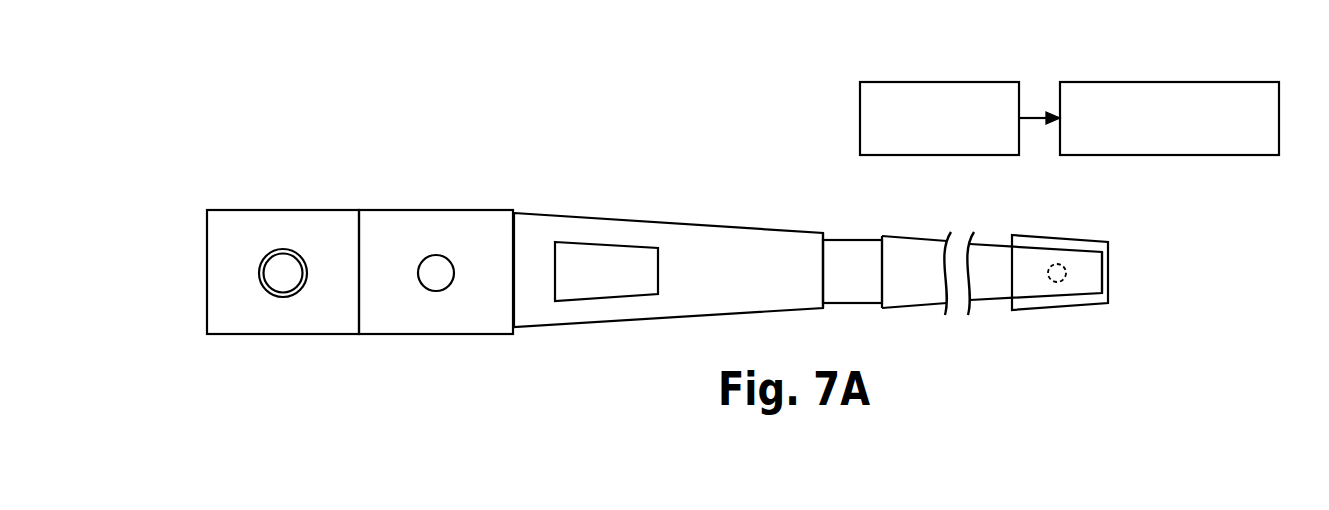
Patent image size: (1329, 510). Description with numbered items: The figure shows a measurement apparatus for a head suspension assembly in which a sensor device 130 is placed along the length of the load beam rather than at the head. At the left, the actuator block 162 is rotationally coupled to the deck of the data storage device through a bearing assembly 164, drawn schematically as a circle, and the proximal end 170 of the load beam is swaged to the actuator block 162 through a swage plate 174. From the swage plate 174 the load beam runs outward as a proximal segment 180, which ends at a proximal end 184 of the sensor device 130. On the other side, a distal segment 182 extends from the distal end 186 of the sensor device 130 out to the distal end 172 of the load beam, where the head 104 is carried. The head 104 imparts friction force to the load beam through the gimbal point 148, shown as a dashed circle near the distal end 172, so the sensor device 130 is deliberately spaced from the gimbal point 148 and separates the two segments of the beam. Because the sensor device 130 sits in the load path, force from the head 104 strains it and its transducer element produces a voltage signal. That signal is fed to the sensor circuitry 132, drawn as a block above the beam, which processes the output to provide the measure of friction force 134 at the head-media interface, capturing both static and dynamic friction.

The head 104 is at (1032, 242).
The sensor device 130 is at (895, 155).
The sensor circuitry 132 is at (952, 82).
The measure of friction force 134 is at (1213, 82).
The gimbal point 148 is at (1060, 265).
The actuator block 162 is at (272, 217).
The bearing assembly 164 is at (282, 273).
The proximal end 170 is at (668, 249).
The distal end 172 is at (1110, 275).
The swage plate 174 is at (470, 222).
The proximal segment 180 is at (716, 284).
The distal segment 182 is at (986, 282).
The proximal end of the sensor device 184 is at (822, 268).
The distal end of the sensor device 186 is at (882, 269).